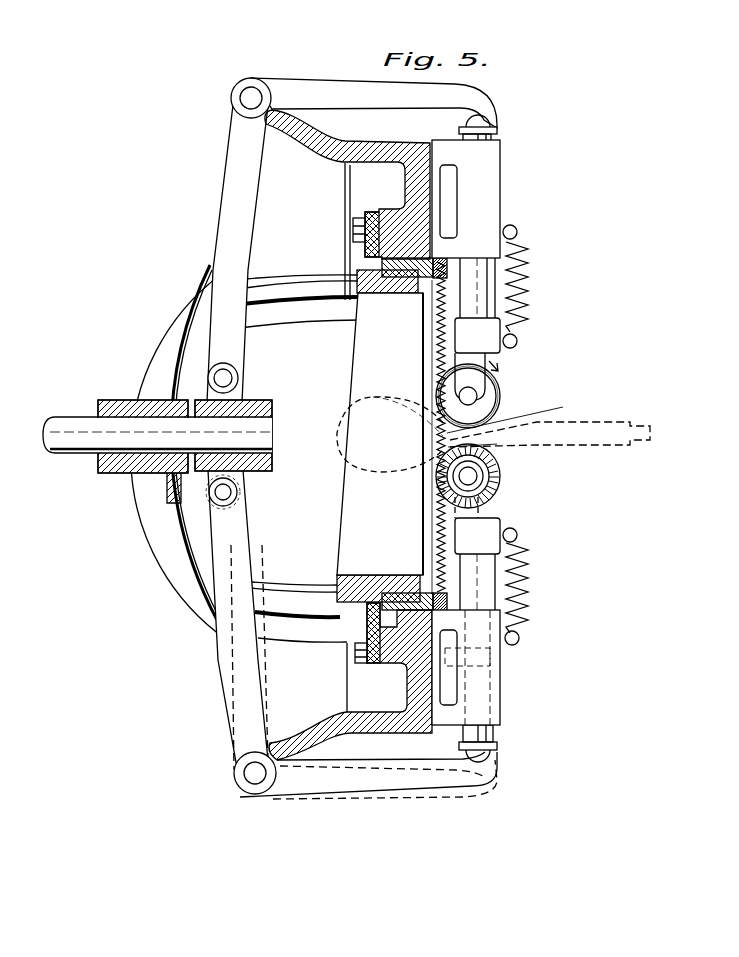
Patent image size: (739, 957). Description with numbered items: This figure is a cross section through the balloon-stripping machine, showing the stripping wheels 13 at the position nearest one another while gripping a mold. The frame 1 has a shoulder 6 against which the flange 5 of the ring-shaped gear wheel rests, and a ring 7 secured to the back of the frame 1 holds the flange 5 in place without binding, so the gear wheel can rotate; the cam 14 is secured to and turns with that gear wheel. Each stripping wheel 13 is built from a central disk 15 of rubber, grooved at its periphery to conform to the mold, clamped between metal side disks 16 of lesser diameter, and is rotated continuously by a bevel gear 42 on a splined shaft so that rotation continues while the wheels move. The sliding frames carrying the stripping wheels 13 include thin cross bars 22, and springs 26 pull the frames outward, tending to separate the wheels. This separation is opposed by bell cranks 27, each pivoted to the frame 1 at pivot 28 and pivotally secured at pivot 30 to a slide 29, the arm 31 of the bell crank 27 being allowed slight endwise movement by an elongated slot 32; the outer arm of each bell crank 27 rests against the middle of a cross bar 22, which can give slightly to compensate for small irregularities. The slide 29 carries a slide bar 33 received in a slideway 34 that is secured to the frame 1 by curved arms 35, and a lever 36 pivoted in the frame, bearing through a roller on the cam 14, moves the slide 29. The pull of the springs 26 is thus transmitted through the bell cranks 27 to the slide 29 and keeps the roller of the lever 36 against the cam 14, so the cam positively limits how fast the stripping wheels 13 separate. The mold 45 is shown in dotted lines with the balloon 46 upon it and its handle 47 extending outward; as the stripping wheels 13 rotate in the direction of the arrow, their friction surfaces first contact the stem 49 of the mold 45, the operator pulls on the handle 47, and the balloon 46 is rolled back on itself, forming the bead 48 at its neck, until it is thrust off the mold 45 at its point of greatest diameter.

The frame 1 is at (347, 664).
The flange 5 is at (378, 656).
The shoulder 6 is at (390, 627).
The ring 7 is at (364, 207).
The stripping wheel 13 is at (489, 397).
The cam 14 is at (392, 435).
The central disk 15 is at (500, 372).
The side disk 16 is at (500, 407).
The cross bar 22 is at (498, 130).
The spring 26 is at (531, 590).
The bell crank 27 is at (318, 78).
The pivot 28 is at (252, 88).
The slide 29 is at (271, 406).
The pivot 30 is at (228, 492).
The arm 31 is at (237, 253).
The elongated slot 32 is at (234, 503).
The slide bar 33 is at (157, 435).
The slideway 34 is at (118, 475).
The curved arm 35 is at (179, 452).
The lever 36 is at (239, 627).
The bevel gear 42 is at (501, 476).
The mold 45 is at (408, 425).
The balloon 46 is at (380, 404).
The handle 47 is at (550, 439).
The bead 48 is at (523, 416).
The stem 49 is at (498, 446).